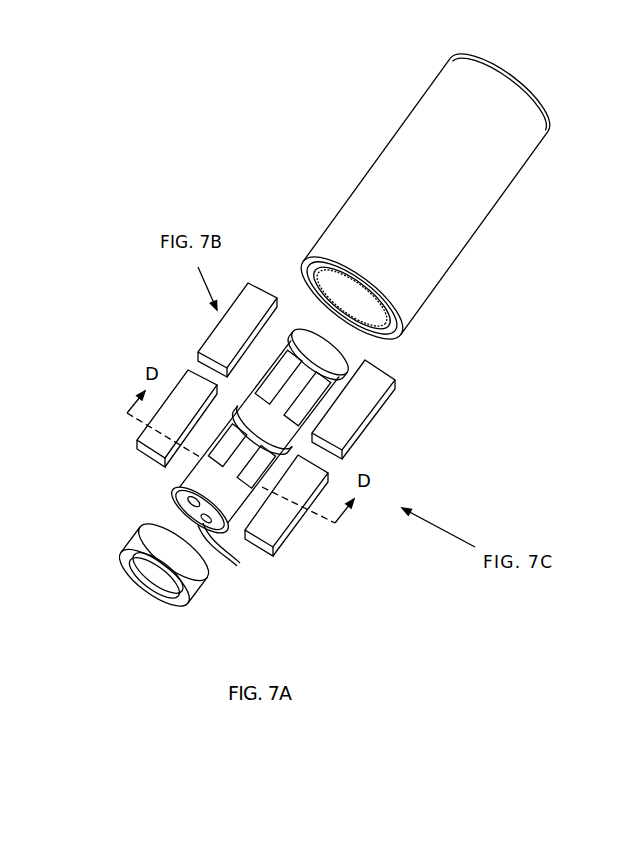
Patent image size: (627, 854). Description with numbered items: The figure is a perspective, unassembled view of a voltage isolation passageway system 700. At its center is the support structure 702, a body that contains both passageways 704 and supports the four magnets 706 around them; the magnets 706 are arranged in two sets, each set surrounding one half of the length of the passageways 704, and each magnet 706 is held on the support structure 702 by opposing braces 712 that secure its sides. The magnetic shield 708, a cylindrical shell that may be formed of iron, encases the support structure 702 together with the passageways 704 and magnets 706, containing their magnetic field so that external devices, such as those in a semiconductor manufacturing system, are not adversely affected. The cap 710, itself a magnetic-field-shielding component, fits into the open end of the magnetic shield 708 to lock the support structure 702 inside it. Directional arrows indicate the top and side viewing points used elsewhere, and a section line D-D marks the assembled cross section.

The voltage isolation passageway system 700 is at (205, 100).
The support structure 702 is at (341, 345).
The passageways 704 is at (233, 557).
The magnets 706 is at (213, 328).
The magnetic shield 708 is at (382, 155).
The cap 710 is at (148, 526).
The opposing braces 712 is at (276, 372).